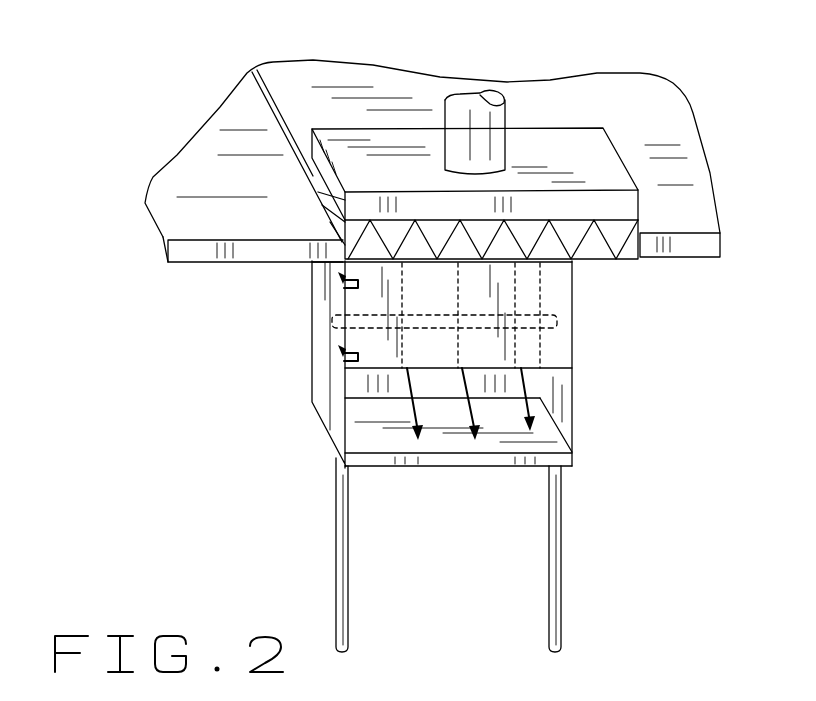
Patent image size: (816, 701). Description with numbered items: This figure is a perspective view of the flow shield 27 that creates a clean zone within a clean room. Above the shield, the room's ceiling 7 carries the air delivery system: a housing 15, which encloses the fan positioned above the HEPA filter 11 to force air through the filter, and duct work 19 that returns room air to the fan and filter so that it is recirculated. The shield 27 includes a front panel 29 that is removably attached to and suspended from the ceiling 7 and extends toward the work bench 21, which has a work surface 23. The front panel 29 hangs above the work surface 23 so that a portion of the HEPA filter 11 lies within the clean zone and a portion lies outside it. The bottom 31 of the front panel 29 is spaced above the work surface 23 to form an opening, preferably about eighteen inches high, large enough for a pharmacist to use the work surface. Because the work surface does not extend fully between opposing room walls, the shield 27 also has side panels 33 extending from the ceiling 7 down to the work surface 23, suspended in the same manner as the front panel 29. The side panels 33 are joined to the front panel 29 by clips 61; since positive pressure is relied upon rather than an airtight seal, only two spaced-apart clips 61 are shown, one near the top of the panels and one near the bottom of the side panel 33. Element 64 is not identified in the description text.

The ceiling 7 is at (660, 134).
The HEPA filter 11 is at (638, 223).
The housing 15 is at (360, 150).
The duct work 19 is at (505, 115).
The work bench 21 is at (583, 510).
The work surface 23 is at (543, 442).
The shield 27 is at (298, 333).
The front panel 29 is at (342, 344).
The bottom 31 is at (533, 369).
The side panel 33 is at (572, 410).
The clip 61 is at (338, 274).
The guide path 64 is at (358, 315).